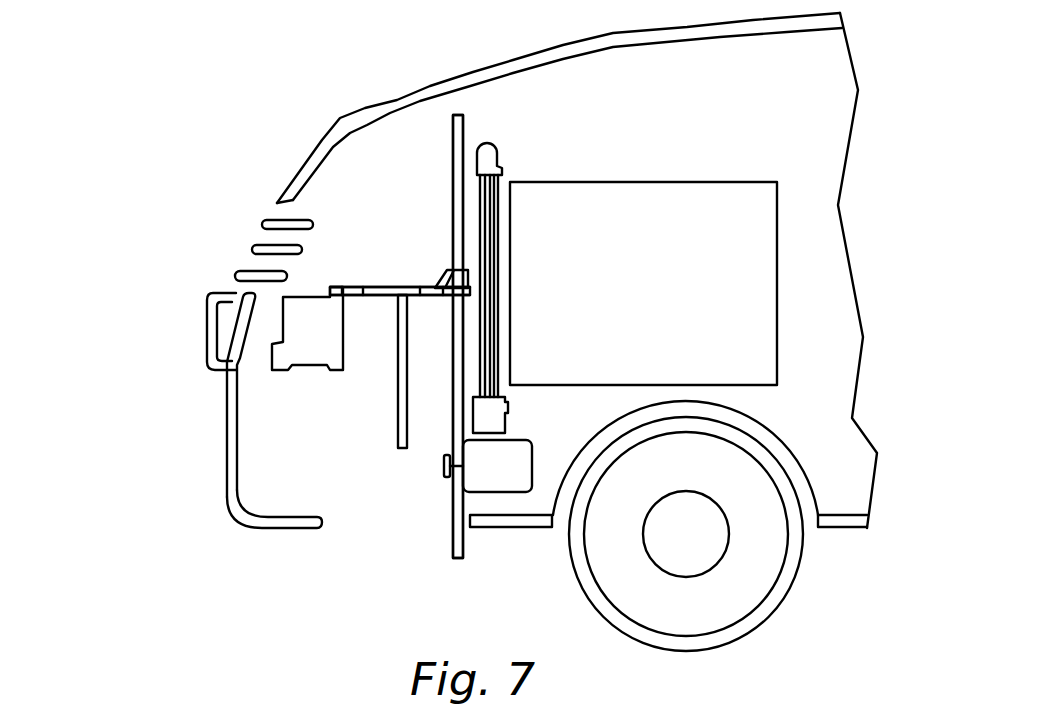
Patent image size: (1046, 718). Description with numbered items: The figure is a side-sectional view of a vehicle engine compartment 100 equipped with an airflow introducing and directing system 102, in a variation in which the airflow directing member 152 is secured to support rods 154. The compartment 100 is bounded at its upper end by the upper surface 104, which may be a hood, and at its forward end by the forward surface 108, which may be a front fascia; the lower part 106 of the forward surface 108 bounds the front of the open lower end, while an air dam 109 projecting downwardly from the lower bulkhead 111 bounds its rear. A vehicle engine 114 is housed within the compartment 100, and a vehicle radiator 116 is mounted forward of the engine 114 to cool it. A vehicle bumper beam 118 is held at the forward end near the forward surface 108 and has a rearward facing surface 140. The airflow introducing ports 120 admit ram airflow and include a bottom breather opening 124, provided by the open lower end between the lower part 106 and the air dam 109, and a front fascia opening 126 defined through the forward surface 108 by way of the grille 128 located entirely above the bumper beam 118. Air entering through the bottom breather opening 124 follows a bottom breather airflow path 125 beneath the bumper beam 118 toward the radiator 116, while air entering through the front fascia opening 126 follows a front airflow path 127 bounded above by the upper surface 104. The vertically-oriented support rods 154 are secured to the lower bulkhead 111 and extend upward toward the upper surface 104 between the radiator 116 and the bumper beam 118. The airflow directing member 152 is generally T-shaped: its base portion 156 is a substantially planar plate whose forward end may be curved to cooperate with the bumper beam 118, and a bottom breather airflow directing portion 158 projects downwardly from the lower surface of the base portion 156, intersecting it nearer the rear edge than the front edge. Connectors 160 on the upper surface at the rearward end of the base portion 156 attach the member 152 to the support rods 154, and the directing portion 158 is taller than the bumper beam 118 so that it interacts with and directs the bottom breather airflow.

The vehicle engine compartment 100 is at (470, 100).
The airflow introducing and directing system 102 is at (130, 191).
The vehicle engine compartment upper surface 104 is at (382, 100).
The lower part of the forward surface 106 is at (295, 530).
The vehicle engine compartment forward surface 108 is at (227, 452).
The air dam 109 is at (460, 543).
The lower bulkhead 111 is at (513, 468).
The vehicle engine 114 is at (715, 190).
The vehicle radiator 116 is at (500, 160).
The vehicle bumper beam 118 is at (280, 370).
The airflow introducing ports 120 is at (160, 252).
The bottom breather opening 124 is at (437, 568).
The bottom breather airflow path 125 is at (330, 475).
The front fascia opening 126 is at (246, 232).
The front airflow path 127 is at (358, 169).
The vehicle front fascia or grille 128 is at (267, 218).
The vehicle bumper beam rearward facing surface 140 is at (343, 333).
The airflow directing member 152 is at (354, 409).
The support rods 154 is at (453, 135).
The base portion 156 is at (358, 287).
The bottom breather airflow directing portion 158 is at (398, 427).
The connectors 160 is at (453, 280).